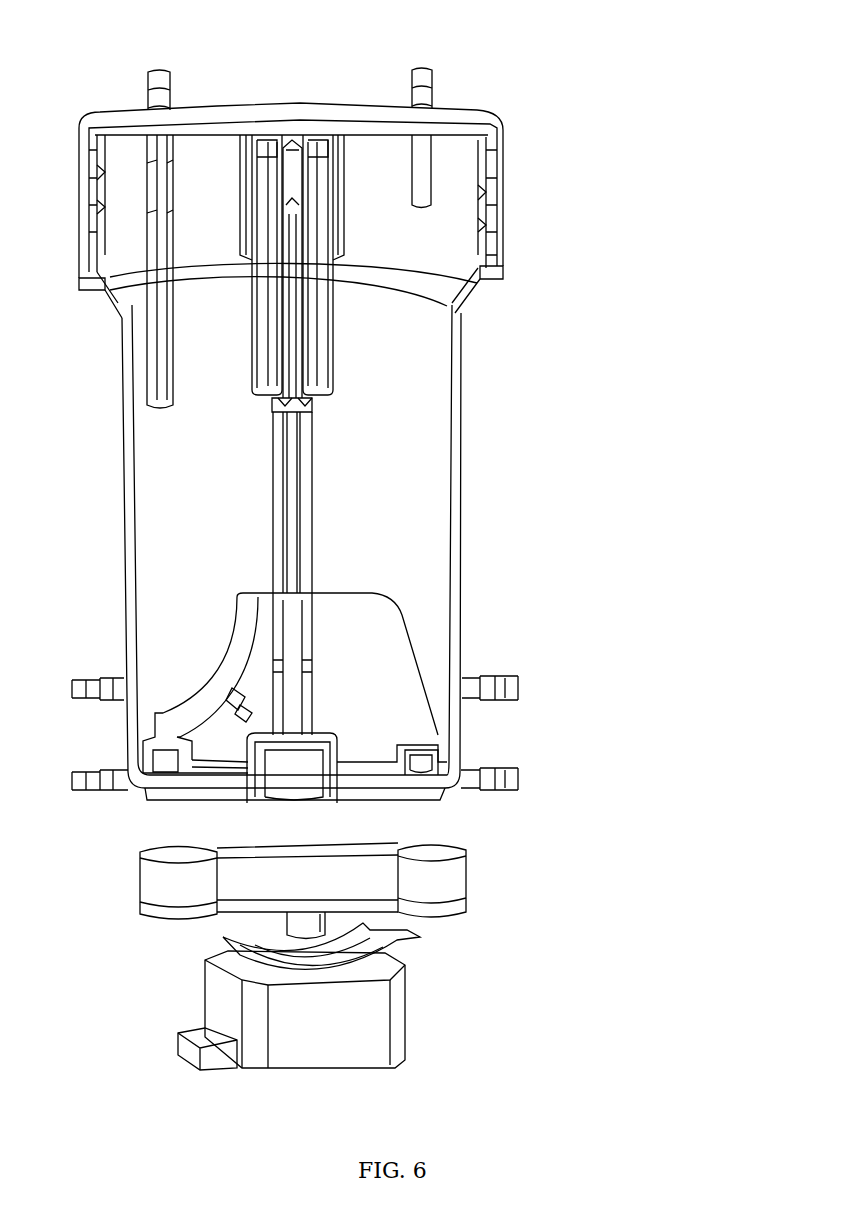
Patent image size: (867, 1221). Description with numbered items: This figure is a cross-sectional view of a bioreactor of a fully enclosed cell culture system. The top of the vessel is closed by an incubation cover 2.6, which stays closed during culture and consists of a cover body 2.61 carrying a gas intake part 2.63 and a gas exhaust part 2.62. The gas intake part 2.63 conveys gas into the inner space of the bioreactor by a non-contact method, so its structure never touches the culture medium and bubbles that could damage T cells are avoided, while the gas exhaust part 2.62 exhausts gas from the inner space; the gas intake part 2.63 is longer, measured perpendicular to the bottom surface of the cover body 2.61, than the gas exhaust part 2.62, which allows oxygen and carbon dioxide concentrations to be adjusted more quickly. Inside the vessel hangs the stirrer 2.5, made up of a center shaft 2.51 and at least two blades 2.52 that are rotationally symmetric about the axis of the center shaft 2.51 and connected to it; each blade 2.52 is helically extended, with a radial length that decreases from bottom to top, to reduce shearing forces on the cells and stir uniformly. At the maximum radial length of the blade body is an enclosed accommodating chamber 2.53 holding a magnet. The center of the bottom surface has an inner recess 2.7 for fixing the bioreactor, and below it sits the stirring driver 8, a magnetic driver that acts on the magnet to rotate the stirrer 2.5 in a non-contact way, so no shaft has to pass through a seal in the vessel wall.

The incubation cover 2.6 is at (493, 232).
The gas intake part 2.63 is at (160, 102).
The cover body 2.61 is at (300, 113).
The gas exhaust part 2.62 is at (422, 103).
The stirrer 2.5 is at (293, 402).
The center shaft 2.51 is at (310, 482).
The blade 2.52 is at (367, 640).
The inner recess 2.7 is at (260, 787).
The enclosed accommodating chamber 2.53 is at (417, 760).
The stirring driver 8 is at (438, 872).